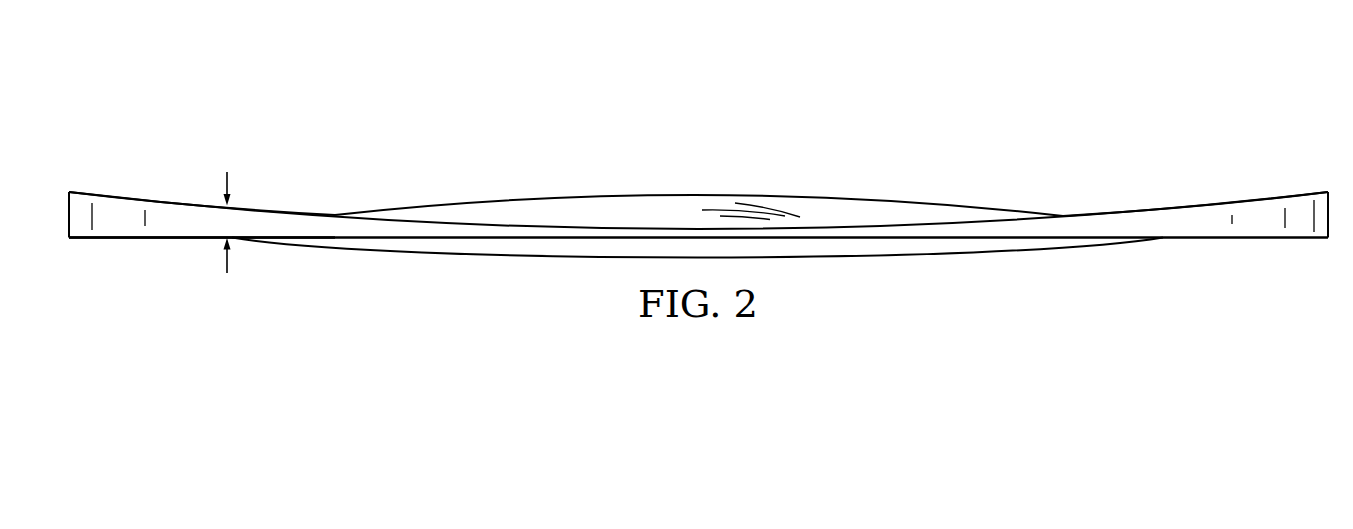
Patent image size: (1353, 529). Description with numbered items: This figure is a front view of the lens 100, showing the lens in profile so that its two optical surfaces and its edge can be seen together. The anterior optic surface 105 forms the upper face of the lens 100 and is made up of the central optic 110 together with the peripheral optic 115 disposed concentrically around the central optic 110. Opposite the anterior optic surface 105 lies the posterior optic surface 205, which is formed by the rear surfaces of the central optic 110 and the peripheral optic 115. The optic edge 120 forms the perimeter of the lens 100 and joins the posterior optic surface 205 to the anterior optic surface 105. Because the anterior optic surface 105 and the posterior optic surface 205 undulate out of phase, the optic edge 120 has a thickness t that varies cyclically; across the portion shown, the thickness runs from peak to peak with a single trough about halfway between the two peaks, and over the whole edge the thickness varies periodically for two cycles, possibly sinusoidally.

The lens 100 is at (504, 74).
The anterior optic surface 105 is at (972, 150).
The central optic 110 is at (698, 193).
The peripheral optic 115 is at (185, 203).
The optic edge 120 is at (1255, 199).
The posterior optic surface 205 is at (356, 303).